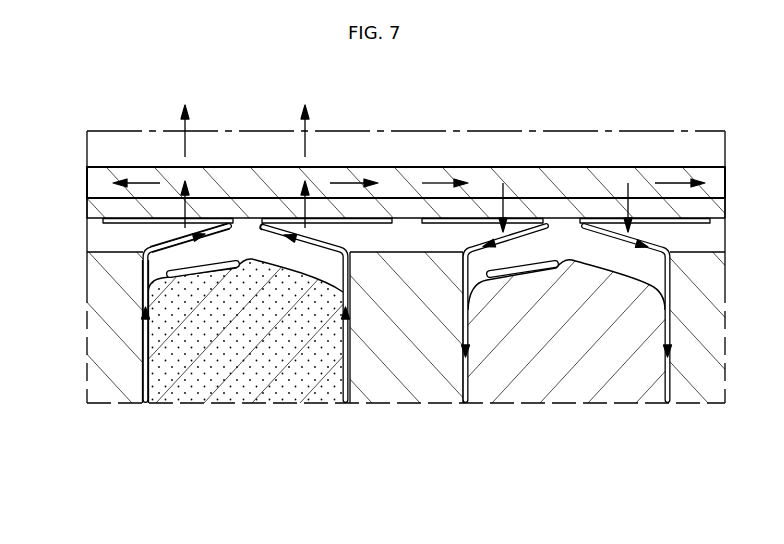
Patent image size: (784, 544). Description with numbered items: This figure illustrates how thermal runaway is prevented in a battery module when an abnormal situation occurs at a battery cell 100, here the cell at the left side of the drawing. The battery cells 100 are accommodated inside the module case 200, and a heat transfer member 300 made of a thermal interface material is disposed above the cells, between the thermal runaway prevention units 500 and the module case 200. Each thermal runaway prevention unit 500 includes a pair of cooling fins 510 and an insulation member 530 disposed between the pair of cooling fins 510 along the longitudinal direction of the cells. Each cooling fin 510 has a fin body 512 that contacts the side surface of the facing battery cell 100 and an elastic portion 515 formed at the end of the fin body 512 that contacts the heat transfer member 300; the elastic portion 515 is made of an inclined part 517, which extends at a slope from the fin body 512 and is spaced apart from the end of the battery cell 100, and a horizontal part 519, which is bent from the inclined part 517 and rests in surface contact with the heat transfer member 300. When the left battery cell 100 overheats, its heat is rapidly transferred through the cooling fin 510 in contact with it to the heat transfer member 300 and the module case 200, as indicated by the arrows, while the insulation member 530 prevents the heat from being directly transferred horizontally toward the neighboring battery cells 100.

The battery cell 100 is at (234, 379).
The module case 200 is at (87, 182).
The heat transfer member 300 is at (87, 205).
The thermal runaway prevention unit 500 is at (377, 305).
The cooling fin 510 is at (351, 276).
The fin body 512 is at (143, 355).
The elastic portion 515 is at (138, 240).
The inclined part 517 is at (277, 232).
The horizontal part 519 is at (327, 222).
The insulation member 530 is at (103, 410).